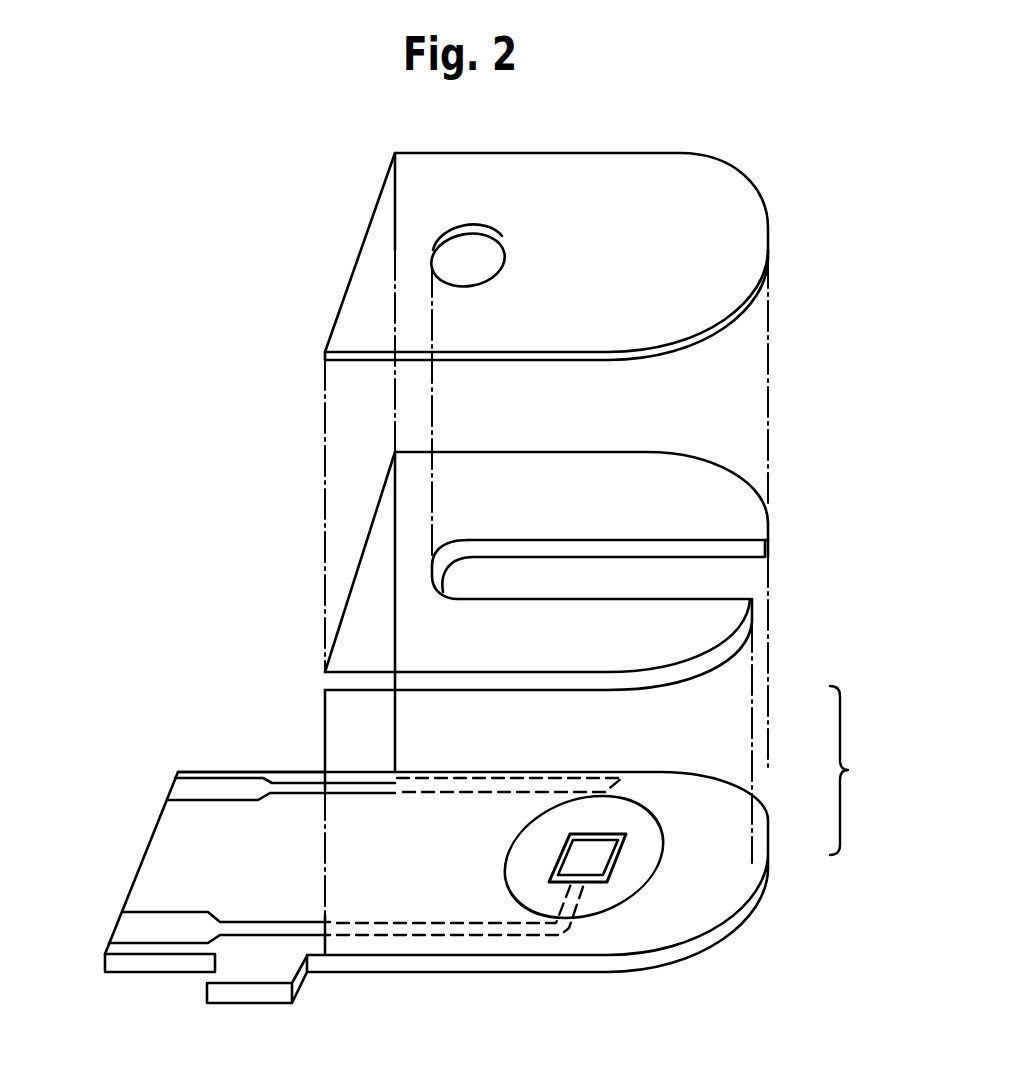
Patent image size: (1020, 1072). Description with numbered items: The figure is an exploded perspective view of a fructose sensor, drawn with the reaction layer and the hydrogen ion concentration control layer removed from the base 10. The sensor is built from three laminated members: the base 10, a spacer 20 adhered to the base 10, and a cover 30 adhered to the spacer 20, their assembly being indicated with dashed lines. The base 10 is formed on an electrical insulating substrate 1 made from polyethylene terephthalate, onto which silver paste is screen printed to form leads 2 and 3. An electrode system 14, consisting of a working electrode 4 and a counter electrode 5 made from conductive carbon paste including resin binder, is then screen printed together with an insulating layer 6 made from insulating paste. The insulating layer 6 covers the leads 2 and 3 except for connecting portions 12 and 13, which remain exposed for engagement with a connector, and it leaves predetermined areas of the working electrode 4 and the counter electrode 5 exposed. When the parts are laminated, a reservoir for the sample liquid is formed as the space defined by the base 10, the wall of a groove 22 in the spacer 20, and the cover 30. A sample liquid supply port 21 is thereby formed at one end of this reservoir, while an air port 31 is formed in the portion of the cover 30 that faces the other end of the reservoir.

The electrical insulating substrate 1 is at (203, 847).
The lead 2 is at (490, 930).
The lead 3 is at (600, 780).
The working electrode 4 is at (593, 858).
The counter electrode 5 is at (640, 823).
The insulating layer 6 is at (440, 888).
The base 10 is at (700, 937).
The connecting portion 12 is at (140, 930).
The connecting portion 13 is at (185, 790).
The electrode system 14 is at (863, 770).
The spacer 20 is at (738, 471).
The sample liquid supply port 21 is at (744, 591).
The groove 22 is at (533, 568).
The cover 30 is at (769, 228).
The air port 31 is at (465, 253).